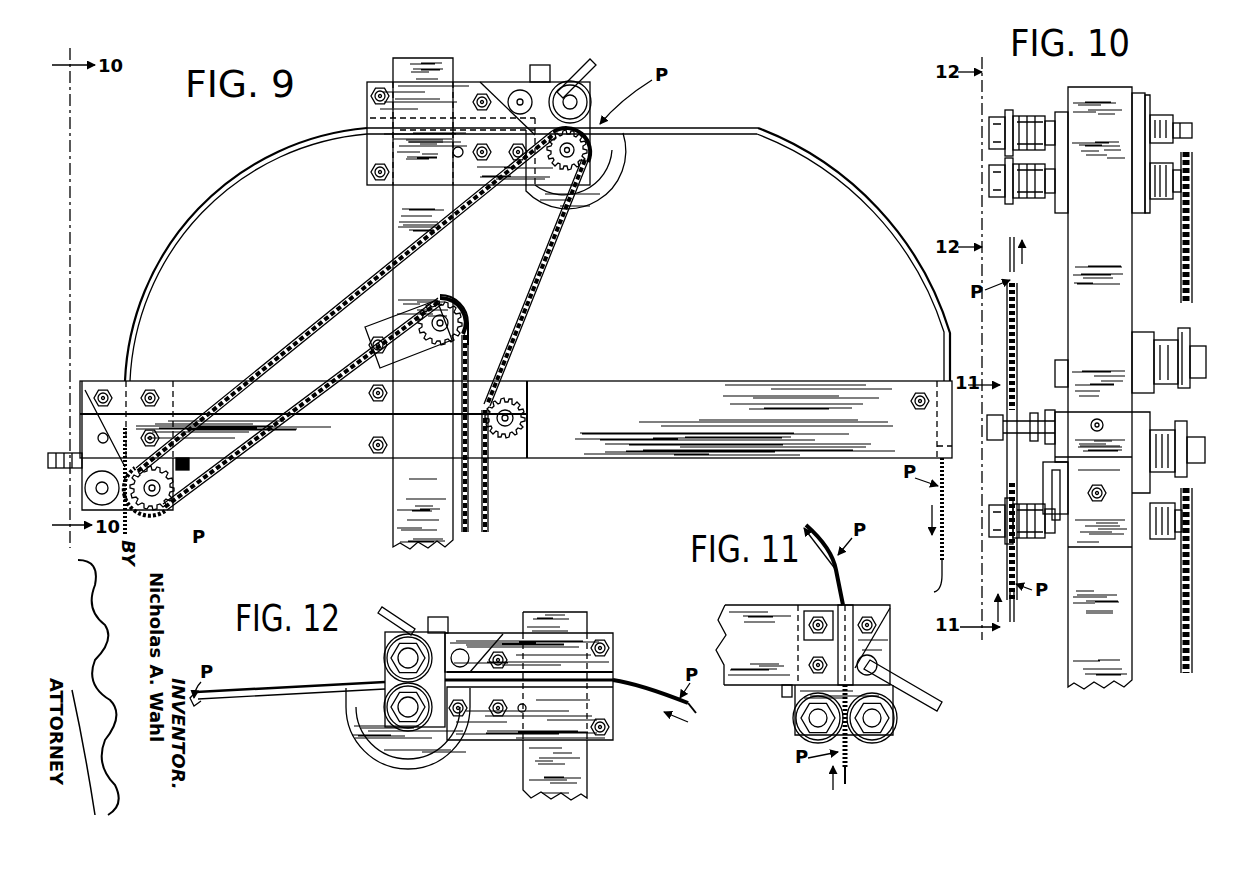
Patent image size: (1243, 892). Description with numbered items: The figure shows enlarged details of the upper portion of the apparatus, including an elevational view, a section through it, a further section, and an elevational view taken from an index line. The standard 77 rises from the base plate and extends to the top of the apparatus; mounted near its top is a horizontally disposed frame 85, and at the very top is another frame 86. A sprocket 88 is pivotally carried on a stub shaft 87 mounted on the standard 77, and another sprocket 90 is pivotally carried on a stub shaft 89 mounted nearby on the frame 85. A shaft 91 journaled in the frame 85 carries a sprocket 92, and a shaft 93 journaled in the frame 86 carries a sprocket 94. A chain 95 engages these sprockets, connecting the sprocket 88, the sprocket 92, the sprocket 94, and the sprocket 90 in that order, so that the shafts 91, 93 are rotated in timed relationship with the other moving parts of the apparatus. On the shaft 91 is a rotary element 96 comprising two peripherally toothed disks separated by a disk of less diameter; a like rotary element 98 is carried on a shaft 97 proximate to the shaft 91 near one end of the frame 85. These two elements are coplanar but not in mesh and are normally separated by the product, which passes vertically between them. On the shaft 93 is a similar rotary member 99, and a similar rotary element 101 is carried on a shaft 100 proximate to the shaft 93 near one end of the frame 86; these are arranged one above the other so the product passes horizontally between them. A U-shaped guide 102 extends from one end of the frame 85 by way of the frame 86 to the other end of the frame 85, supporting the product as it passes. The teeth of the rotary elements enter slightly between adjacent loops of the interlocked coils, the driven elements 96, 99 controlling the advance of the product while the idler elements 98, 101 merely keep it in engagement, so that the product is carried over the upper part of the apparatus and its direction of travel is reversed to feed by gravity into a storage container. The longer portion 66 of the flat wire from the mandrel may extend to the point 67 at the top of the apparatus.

In FIG. 9, the longer portion of the wire 66 is at (940, 556).
In FIG. 10, the longer portion of the wire 66 is at (1010, 254).
In FIG. 12, the longer portion of the wire 66 is at (690, 706).
In FIG. 11, the longer portion of the wire 66 is at (812, 530).
In FIG. 9, the top of the apparatus 67 is at (927, 579).
In FIG. 9, the standard 77 is at (400, 72).
In FIG. 10, the standard 77 is at (1100, 96).
In FIG. 12, the standard 77 is at (548, 615).
In FIG. 9, the frame 85 is at (682, 379).
In FIG. 10, the frame 85 is at (1064, 540).
In FIG. 11, the frame 85 is at (828, 604).
In FIG. 9, the frame 86 is at (465, 84).
In FIG. 10, the frame 86 is at (1148, 112).
In FIG. 12, the frame 86 is at (605, 634).
In FIG. 9, the stub shaft 87 is at (452, 307).
In FIG. 10, the stub shaft 87 is at (1205, 352).
In FIG. 9, the sprocket 88 is at (466, 322).
In FIG. 10, the sprocket 88 is at (1180, 344).
In FIG. 9, the stub shaft 89 is at (520, 420).
In FIG. 10, the stub shaft 89 is at (1200, 445).
In FIG. 9, the sprocket 90 is at (520, 400).
In FIG. 10, the sprocket 90 is at (1172, 432).
In FIG. 9, the shaft 91 is at (176, 490).
In FIG. 11, the shaft 91 is at (815, 722).
In FIG. 9, the sprocket 92 is at (165, 512).
In FIG. 10, the sprocket 92 is at (1193, 505).
In FIG. 9, the shaft 93 is at (575, 148).
In FIG. 12, the shaft 93 is at (400, 720).
In FIG. 9, the sprocket 94 is at (592, 160).
In FIG. 10, the sprocket 94 is at (1193, 165).
In FIG. 9, the chain 95 is at (337, 312).
In FIG. 10, the chain 95 is at (1182, 270).
In FIG. 11, the rotary element 96 is at (796, 718).
In FIG. 9, the shaft 97 is at (100, 470).
In FIG. 11, the shaft 97 is at (870, 722).
In FIG. 9, the rotary element 98 is at (128, 522).
In FIG. 10, the rotary element 98 is at (1000, 536).
In FIG. 11, the rotary element 98 is at (896, 725).
In FIG. 10, the rotary member 99 is at (1012, 202).
In FIG. 12, the rotary member 99 is at (396, 712).
In FIG. 9, the shaft 100 is at (578, 98).
In FIG. 12, the shaft 100 is at (400, 660).
In FIG. 9, the rotary element 101 is at (596, 114).
In FIG. 10, the rotary element 101 is at (1012, 115).
In FIG. 12, the rotary element 101 is at (385, 650).
In FIG. 9, the U-shaped guide 102 is at (196, 216).
In FIG. 10, the U-shaped guide 102 is at (1022, 392).
In FIG. 12, the U-shaped guide 102 is at (245, 704).
In FIG. 11, the U-shaped guide 102 is at (848, 590).